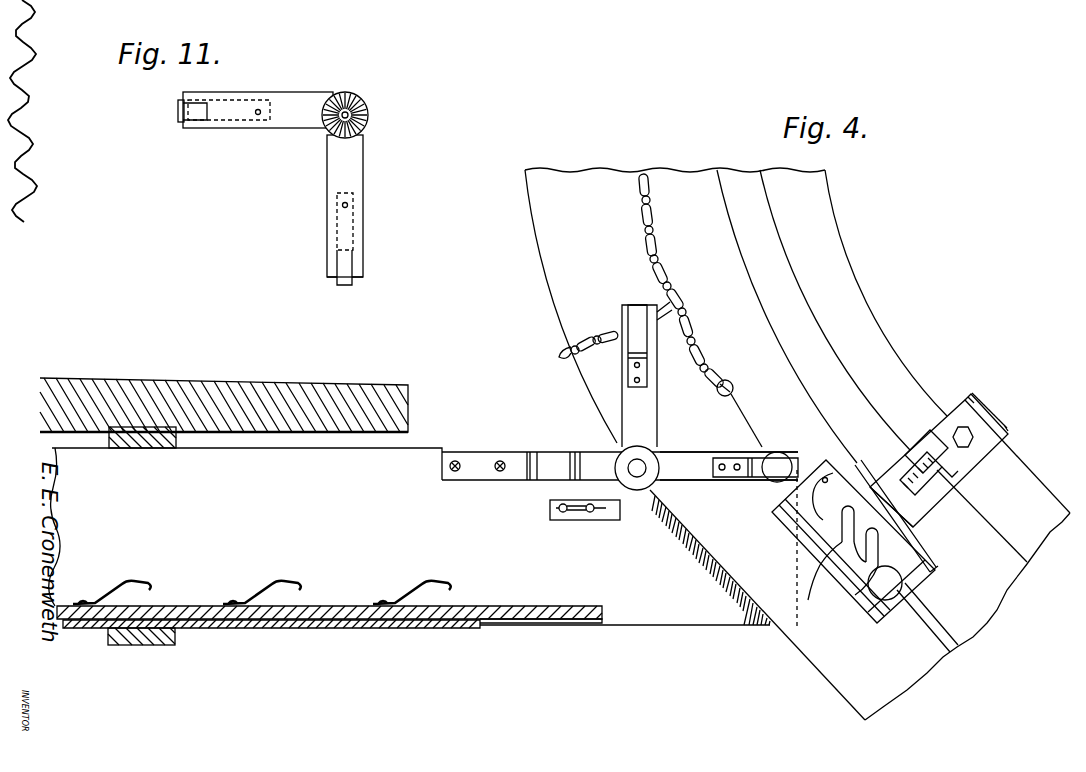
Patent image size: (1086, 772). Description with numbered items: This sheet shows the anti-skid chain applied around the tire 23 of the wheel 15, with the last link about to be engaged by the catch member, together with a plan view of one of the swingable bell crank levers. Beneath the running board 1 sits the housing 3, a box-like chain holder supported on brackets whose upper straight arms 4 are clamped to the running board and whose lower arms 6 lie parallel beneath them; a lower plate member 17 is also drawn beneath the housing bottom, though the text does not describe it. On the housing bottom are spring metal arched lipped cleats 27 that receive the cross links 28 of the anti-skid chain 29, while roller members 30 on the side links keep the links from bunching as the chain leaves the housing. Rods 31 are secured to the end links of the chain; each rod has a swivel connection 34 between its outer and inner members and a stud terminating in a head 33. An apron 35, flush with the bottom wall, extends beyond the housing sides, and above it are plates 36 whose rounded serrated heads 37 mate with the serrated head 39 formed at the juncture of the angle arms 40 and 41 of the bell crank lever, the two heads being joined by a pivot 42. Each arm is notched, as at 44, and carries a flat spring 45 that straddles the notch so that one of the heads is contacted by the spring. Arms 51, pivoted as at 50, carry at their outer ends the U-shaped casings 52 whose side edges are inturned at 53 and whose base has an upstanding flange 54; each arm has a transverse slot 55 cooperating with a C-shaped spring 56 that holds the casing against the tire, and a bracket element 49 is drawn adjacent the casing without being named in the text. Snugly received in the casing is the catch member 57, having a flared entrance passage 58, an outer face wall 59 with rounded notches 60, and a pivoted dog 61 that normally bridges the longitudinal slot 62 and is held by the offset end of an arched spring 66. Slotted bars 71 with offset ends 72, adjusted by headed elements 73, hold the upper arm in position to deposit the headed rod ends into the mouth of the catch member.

In FIG. 4, the running board 1 is at (267, 378).
In FIG. 4, the housing 3 is at (303, 616).
In FIG. 4, the upper straight arms 4 is at (137, 438).
In FIG. 4, the lower arms 6 is at (165, 645).
In FIG. 4, the wheel 15 is at (858, 287).
In FIG. 4, the lower plate 17 is at (395, 628).
In FIG. 4, the tire 23 is at (543, 236).
In FIG. 4, the arched lipped plates or cleats 27 is at (273, 585).
In FIG. 4, the cross links 28 is at (565, 348).
In FIG. 4, the anti-skid chain 29 is at (662, 210).
In FIG. 4, the roller members 30 is at (690, 302).
In FIG. 4, the rods 31 is at (748, 413).
In FIG. 4, the heads 33 is at (780, 452).
In FIG. 4, the swivel connection 34 is at (733, 382).
In FIG. 4, the apron 35 is at (560, 623).
In FIG. 4, the plates 36 is at (540, 452).
In FIG. 4, the rounded heads 37 is at (640, 490).
In FIG. 11, the serrated head 39 is at (368, 117).
In FIG. 11, the angle arm 40 is at (288, 124).
In FIG. 4, the angle arm 40 is at (622, 396).
In FIG. 11, the angle arm 41 is at (365, 177).
In FIG. 4, the angle arm 41 is at (702, 480).
In FIG. 4, the pivot 42 is at (650, 452).
In FIG. 11, the slot or notch 44 is at (352, 257).
In FIG. 11, the flat spring 45 is at (183, 110).
In FIG. 4, the flat spring 45 is at (752, 455).
In FIG. 4, the bracket 49 is at (977, 417).
In FIG. 4, the pivot 50 is at (917, 447).
In FIG. 4, the arms 51 is at (890, 483).
In FIG. 4, the casing or housing 52 is at (790, 530).
In FIG. 4, the inturned edges 53 is at (808, 548).
In FIG. 4, the upstanding flange 54 is at (917, 580).
In FIG. 4, the transverse slot 55 is at (927, 500).
In FIG. 4, the C-shaped spring 56 is at (957, 467).
In FIG. 4, the catch member 57 is at (855, 585).
In FIG. 4, the flared entrance passage 58 is at (773, 520).
In FIG. 4, the outer face wall 59 is at (937, 550).
In FIG. 4, the notches 60 is at (833, 560).
In FIG. 4, the dog 61 is at (828, 473).
In FIG. 4, the longitudinal slot 62 is at (823, 603).
In FIG. 4, the arched spring 66 is at (855, 465).
In FIG. 4, the slotted bars 71 is at (570, 523).
In FIG. 4, the offset ends 72 is at (617, 522).
In FIG. 4, the adjustable headed elements 73 is at (567, 517).